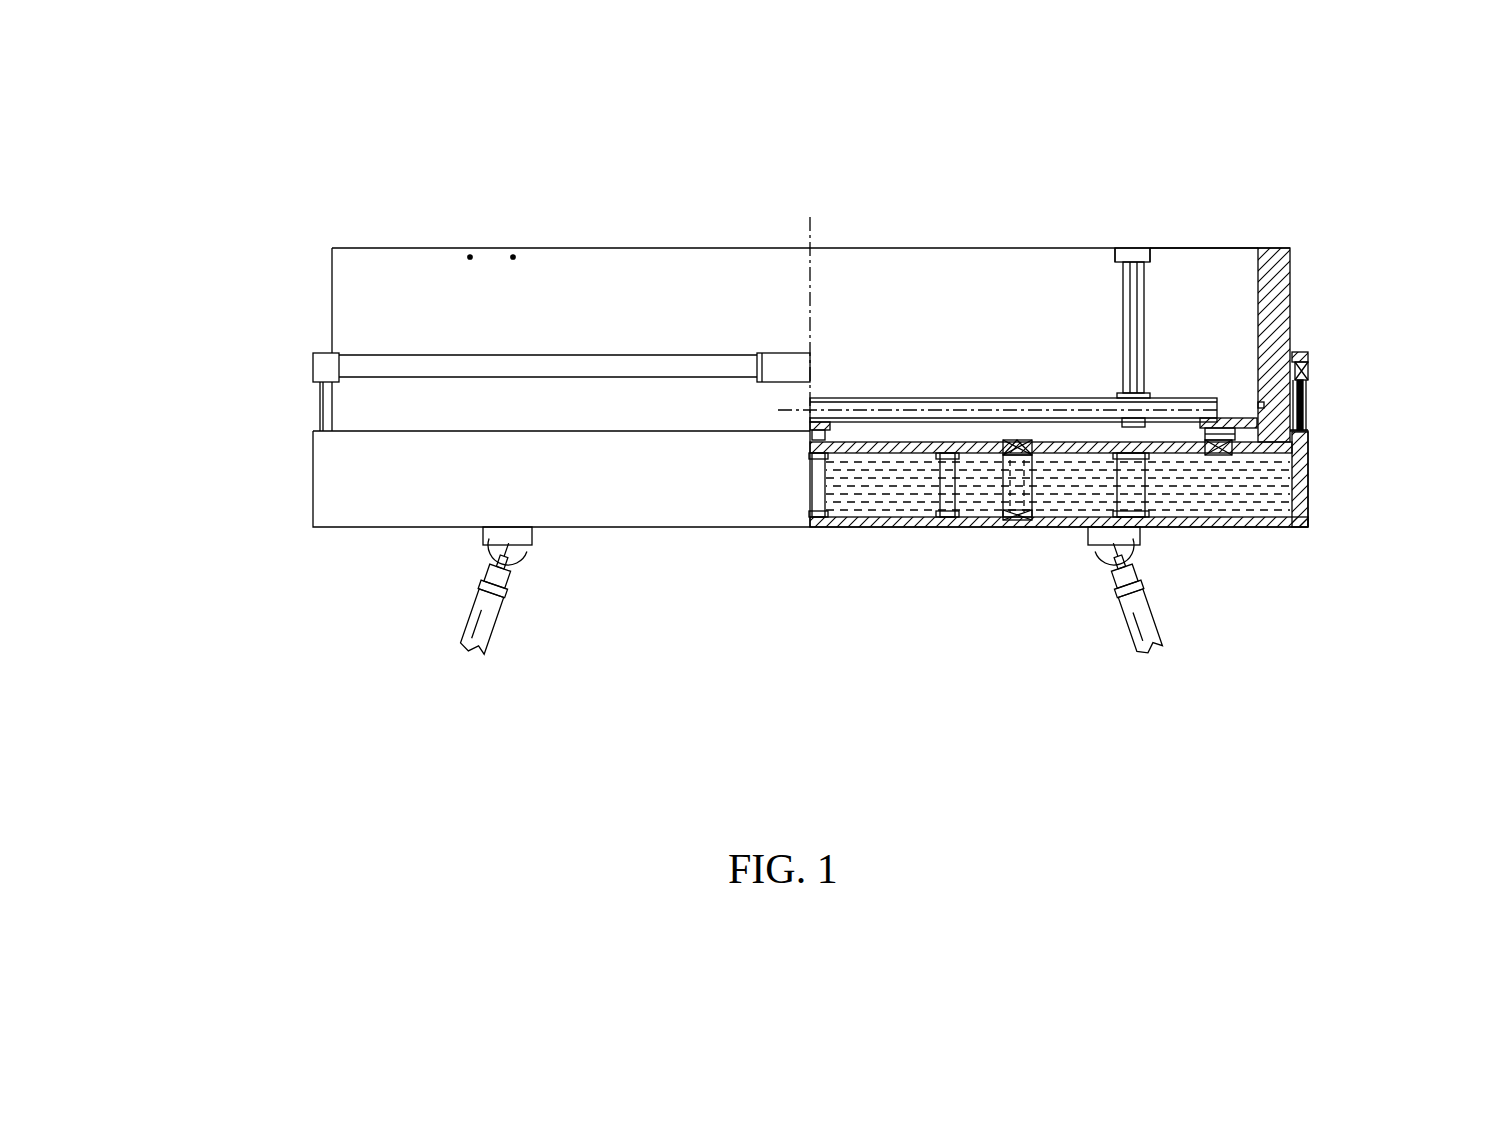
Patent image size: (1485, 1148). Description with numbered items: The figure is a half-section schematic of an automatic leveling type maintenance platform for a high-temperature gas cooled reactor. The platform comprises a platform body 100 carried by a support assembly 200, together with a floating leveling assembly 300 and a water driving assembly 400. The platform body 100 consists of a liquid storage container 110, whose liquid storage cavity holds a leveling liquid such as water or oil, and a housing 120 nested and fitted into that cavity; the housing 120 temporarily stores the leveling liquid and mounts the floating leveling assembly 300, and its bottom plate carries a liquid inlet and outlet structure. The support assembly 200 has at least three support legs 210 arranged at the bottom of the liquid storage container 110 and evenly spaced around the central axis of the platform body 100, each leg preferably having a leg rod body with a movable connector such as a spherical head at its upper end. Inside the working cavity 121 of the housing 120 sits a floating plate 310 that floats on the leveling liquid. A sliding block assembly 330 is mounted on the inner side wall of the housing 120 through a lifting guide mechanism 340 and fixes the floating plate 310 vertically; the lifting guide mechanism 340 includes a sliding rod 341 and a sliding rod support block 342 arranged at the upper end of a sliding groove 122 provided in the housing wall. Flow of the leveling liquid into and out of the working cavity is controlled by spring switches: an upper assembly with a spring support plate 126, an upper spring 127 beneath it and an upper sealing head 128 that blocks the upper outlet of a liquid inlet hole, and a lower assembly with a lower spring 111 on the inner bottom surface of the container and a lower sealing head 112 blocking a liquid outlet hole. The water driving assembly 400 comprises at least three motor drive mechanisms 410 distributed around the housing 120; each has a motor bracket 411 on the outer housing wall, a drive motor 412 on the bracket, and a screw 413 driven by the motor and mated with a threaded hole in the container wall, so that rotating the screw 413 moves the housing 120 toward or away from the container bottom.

The platform body 100 is at (180, 436).
The liquid storage container 110 is at (312, 475).
The lower spring 111 is at (1013, 520).
The lower sealing head 112 is at (1018, 453).
The housing 120 is at (331, 301).
The working cavity 121 is at (870, 355).
The sliding groove 122 is at (1147, 312).
The spring support plate 126 is at (1236, 416).
The upper spring 127 is at (1245, 435).
The upper sealing head 128 is at (1232, 452).
The support assembly 200 is at (920, 733).
The support leg 210 is at (500, 625).
The floating leveling assembly 300 is at (978, 290).
The floating plate 310 is at (1038, 397).
The sliding block assembly 330 is at (1122, 394).
The lifting guide mechanism 340 is at (1050, 202).
The sliding rod 341 is at (1127, 300).
The sliding rod support block 342 is at (1132, 257).
The water driving assembly 400 is at (598, 173).
The motor drive mechanism 410 is at (334, 351).
The motor bracket 411 is at (1310, 351).
The drive motor 412 is at (1310, 367).
The screw 413 is at (1308, 405).